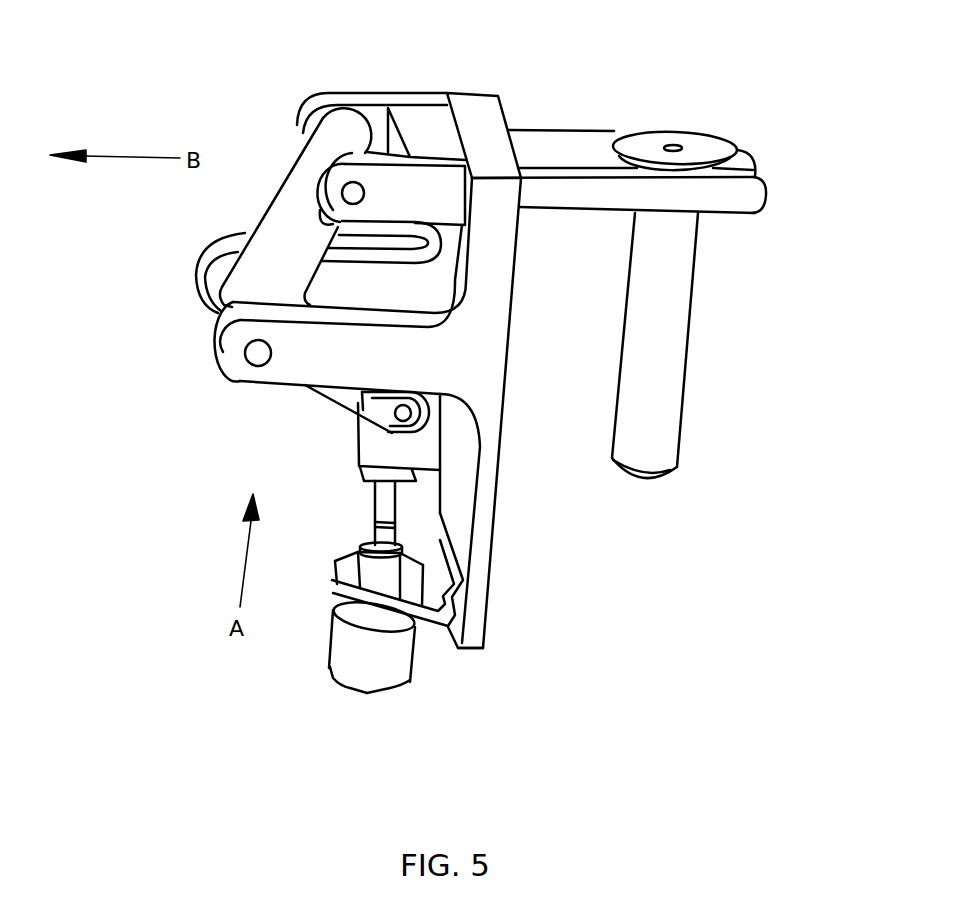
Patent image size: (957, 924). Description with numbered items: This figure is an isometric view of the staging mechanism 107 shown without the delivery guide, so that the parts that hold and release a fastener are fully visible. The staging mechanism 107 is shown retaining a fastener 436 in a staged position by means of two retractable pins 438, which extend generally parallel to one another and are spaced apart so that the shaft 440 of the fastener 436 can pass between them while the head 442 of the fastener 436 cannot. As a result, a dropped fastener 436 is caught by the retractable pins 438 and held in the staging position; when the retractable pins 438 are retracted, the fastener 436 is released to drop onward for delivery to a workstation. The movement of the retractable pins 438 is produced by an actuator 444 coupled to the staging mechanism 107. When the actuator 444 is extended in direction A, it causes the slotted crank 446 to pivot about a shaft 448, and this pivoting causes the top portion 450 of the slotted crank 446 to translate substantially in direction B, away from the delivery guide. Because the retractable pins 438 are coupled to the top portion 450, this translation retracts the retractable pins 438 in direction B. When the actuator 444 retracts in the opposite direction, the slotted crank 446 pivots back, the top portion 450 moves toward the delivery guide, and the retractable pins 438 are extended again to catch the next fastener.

The staging mechanism 107 is at (434, 52).
The fastener 436 is at (697, 276).
The retractable pins 438 is at (577, 145).
The shaft 440 is at (677, 396).
The head 442 is at (700, 147).
The actuator 444 is at (332, 655).
The slotted crank 446 is at (250, 226).
The shaft 448 is at (255, 358).
The top portion 450 is at (313, 140).